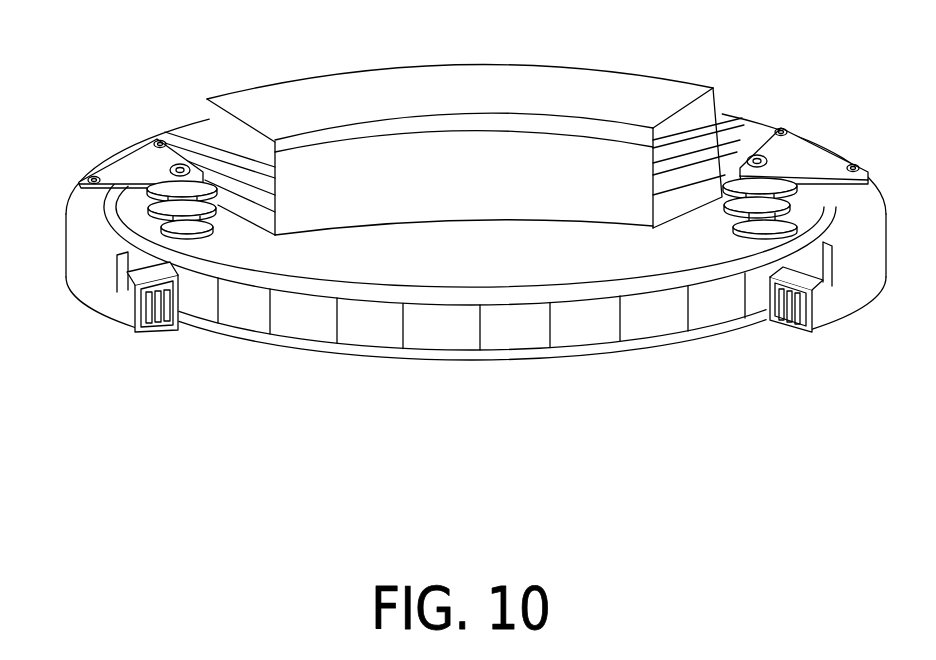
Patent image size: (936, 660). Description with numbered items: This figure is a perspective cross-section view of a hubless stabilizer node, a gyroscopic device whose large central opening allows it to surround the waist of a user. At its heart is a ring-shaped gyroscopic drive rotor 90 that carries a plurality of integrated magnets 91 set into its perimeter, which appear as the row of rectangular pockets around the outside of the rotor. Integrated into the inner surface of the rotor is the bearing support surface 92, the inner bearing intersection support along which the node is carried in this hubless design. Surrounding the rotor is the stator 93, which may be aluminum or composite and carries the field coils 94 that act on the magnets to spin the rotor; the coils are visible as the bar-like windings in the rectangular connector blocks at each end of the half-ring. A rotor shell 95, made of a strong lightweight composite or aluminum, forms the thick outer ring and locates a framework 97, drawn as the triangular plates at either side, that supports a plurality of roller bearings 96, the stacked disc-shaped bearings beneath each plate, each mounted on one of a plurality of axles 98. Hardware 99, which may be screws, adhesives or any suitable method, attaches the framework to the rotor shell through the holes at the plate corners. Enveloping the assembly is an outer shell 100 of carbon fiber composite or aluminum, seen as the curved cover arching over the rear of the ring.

The gyroscopic drive rotor 90 is at (293, 280).
The integrated magnets 91 is at (372, 322).
The bearing support surface 92 is at (700, 160).
The stator 93 is at (152, 325).
The field coils 94 is at (134, 328).
The rotor shell 95 is at (93, 233).
The roller bearings 96 is at (205, 187).
The framework 97 is at (130, 164).
The axles 98 is at (175, 166).
The hardware 99 is at (158, 140).
The outer shell 100 is at (471, 133).